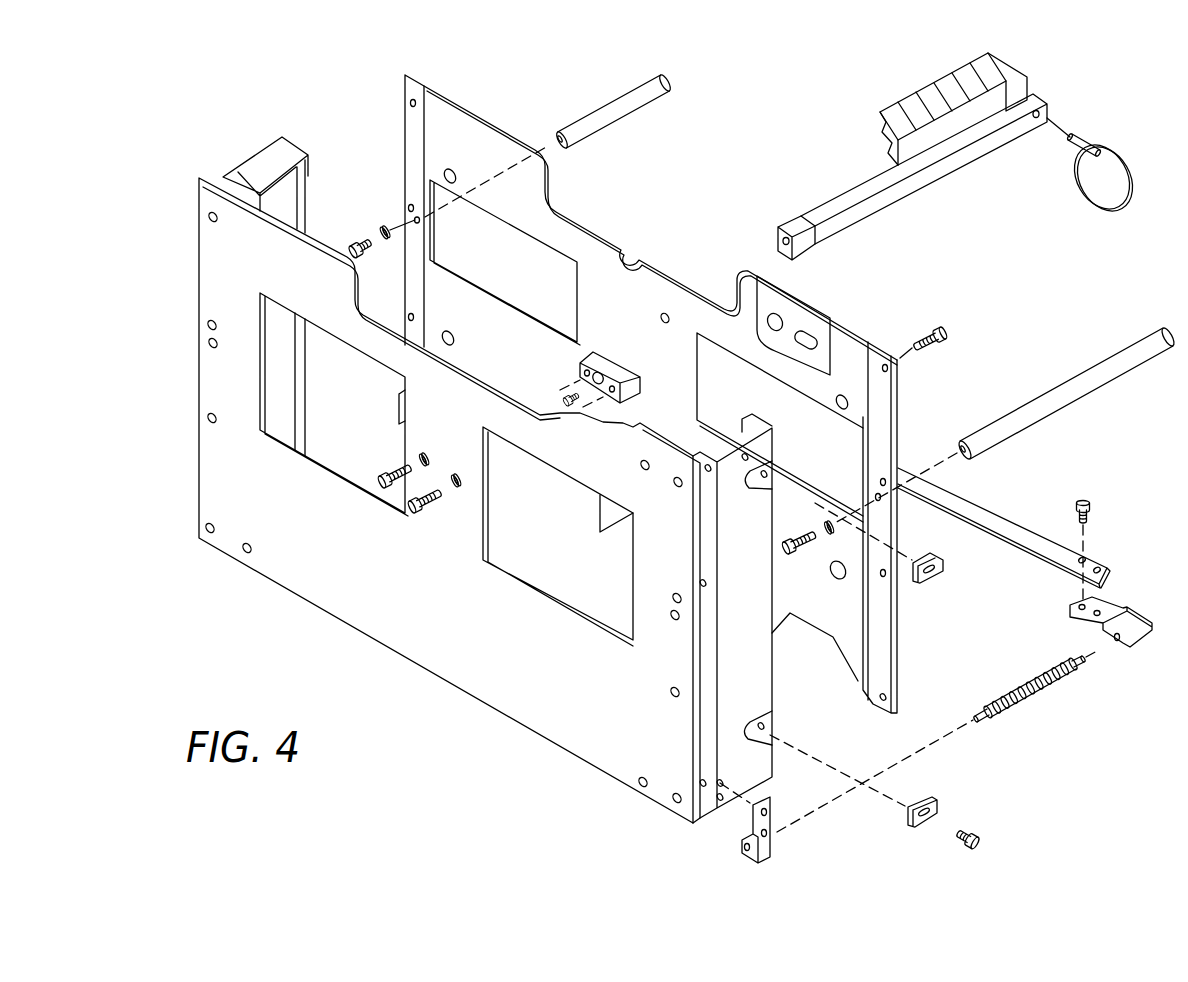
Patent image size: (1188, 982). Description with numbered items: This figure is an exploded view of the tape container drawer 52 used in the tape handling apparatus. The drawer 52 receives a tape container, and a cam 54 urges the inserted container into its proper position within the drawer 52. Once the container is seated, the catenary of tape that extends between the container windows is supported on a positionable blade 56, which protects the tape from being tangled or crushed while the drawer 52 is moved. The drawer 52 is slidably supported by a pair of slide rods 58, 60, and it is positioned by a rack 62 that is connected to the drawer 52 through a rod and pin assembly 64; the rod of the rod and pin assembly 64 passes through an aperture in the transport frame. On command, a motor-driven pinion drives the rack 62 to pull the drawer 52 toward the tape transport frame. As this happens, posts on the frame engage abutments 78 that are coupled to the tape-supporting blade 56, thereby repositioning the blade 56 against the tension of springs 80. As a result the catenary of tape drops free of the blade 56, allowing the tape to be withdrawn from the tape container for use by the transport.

The drawer 52 is at (1006, 747).
The cam 54 is at (617, 364).
The positionable blade 56 is at (1034, 532).
The slide rod 58 is at (584, 118).
The slide rod 60 is at (1110, 382).
The rack 62 is at (902, 112).
The rod and pin assembly 64 is at (1097, 153).
The abutment 78 is at (1143, 637).
The spring 80 is at (1029, 680).